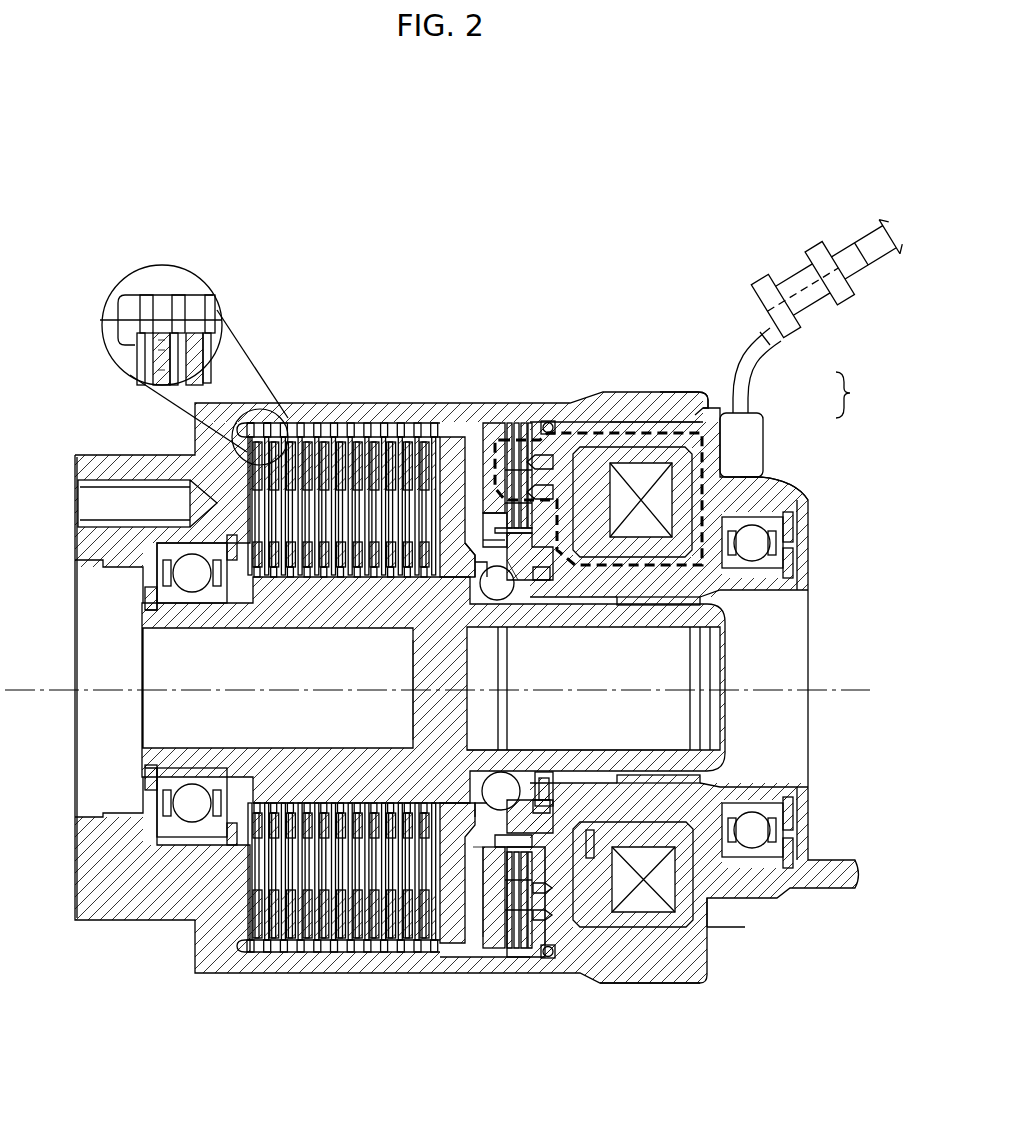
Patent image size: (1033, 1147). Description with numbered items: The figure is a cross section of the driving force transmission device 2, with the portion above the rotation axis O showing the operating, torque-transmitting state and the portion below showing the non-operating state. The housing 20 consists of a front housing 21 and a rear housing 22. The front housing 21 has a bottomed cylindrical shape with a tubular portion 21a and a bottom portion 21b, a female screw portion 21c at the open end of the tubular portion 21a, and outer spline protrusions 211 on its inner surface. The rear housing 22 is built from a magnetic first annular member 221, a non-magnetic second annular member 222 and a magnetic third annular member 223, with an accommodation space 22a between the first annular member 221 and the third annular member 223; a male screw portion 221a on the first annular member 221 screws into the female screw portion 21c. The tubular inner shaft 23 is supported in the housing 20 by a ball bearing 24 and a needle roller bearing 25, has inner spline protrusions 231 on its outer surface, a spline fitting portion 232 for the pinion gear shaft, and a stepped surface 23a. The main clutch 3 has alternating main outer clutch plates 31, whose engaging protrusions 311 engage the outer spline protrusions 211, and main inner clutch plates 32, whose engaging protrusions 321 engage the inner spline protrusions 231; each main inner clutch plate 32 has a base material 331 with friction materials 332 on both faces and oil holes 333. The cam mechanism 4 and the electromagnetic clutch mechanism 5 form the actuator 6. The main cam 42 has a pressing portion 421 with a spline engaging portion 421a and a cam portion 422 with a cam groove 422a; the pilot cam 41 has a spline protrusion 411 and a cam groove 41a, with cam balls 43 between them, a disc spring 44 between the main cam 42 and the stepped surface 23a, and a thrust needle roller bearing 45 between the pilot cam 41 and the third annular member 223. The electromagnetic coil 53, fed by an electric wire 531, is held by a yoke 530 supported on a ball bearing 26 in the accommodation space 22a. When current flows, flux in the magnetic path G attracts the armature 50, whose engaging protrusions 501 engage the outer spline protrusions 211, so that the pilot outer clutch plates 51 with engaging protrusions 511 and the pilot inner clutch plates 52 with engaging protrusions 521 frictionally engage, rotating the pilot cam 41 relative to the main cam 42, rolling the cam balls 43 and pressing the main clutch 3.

The driving force transmission device 2 is at (879, 335).
The housing 20 is at (864, 395).
The front housing 21 is at (416, 625).
The tubular portion 21a is at (318, 410).
The bottom portion 21b is at (112, 882).
The female screw portion 21c is at (663, 413).
The outer spline protrusions 211 is at (160, 305).
The rear housing 22 is at (703, 582).
The accommodation space 22a is at (712, 927).
The first annular member 221 is at (613, 428).
The male screw portion 221a is at (643, 960).
The second annular member 222 is at (550, 430).
The third annular member 223 is at (792, 582).
The inner shaft 23 is at (512, 690).
The stepped surface 23a is at (447, 770).
The inner spline protrusions 231 is at (318, 802).
The spline fitting portion 232 is at (627, 748).
The ball bearing 24 is at (163, 597).
The needle roller bearing 25 is at (697, 600).
The ball bearing 26 is at (775, 524).
The main clutch 3 is at (221, 655).
The main outer clutch plates 31 is at (143, 325).
The engaging protrusions 311 is at (145, 306).
The main inner clutch plates 32 is at (45, 330).
The engaging protrusions 321 is at (296, 572).
The base material 331 is at (150, 352).
The friction materials 332 is at (150, 340).
The oil holes 333 is at (255, 522).
The cam mechanism 4 is at (459, 636).
The pilot cam 41 is at (522, 540).
The cam groove 41a is at (505, 585).
The spline protrusion 411 is at (507, 848).
The main cam 42 is at (437, 643).
The pressing portion 421 is at (452, 470).
The spline engaging portion 421a is at (462, 570).
The cam portion 422 is at (490, 450).
The cam groove 422a is at (493, 612).
The cam balls 43 is at (490, 580).
The disc spring 44 is at (478, 588).
The thrust needle roller bearing 45 is at (547, 790).
The electromagnetic clutch mechanism 5 is at (531, 688).
The armature 50 is at (495, 953).
The engaging protrusions 501 is at (498, 953).
The pilot outer clutch plates 51 is at (547, 953).
The engaging protrusions 511 is at (507, 952).
The pilot inner clutch plates 52 is at (533, 950).
The engaging protrusions 521 is at (512, 848).
The electromagnetic coil 53 is at (655, 492).
The yoke 530 is at (793, 505).
The electric wire 531 is at (752, 345).
The actuator 6 is at (472, 667).
The magnetic path G is at (648, 428).
The rotation axis O is at (866, 688).